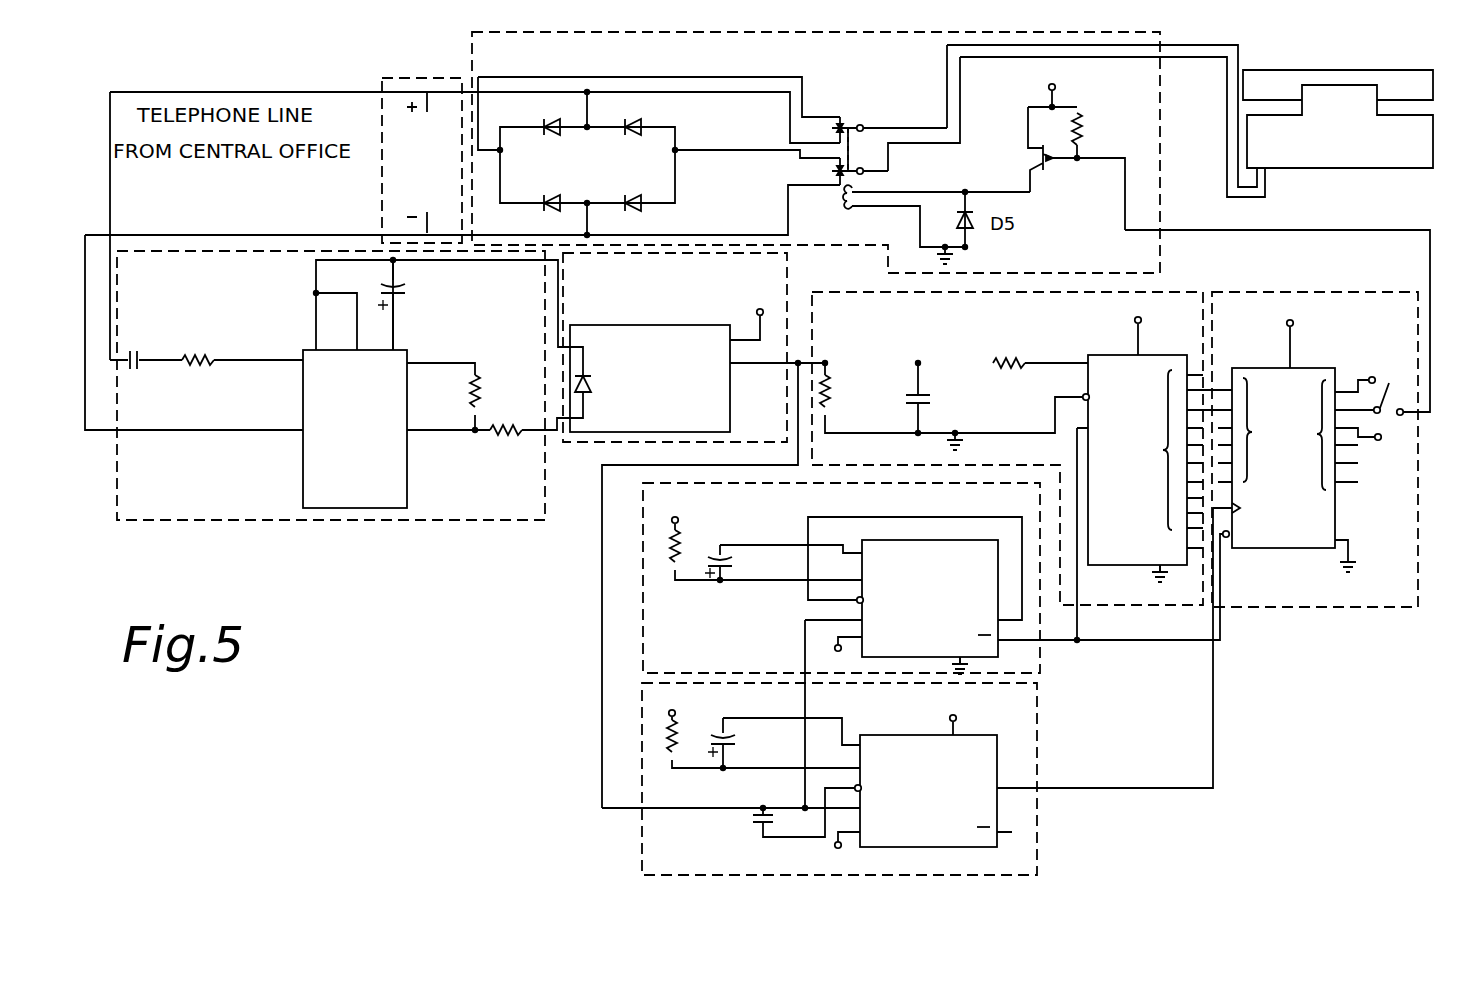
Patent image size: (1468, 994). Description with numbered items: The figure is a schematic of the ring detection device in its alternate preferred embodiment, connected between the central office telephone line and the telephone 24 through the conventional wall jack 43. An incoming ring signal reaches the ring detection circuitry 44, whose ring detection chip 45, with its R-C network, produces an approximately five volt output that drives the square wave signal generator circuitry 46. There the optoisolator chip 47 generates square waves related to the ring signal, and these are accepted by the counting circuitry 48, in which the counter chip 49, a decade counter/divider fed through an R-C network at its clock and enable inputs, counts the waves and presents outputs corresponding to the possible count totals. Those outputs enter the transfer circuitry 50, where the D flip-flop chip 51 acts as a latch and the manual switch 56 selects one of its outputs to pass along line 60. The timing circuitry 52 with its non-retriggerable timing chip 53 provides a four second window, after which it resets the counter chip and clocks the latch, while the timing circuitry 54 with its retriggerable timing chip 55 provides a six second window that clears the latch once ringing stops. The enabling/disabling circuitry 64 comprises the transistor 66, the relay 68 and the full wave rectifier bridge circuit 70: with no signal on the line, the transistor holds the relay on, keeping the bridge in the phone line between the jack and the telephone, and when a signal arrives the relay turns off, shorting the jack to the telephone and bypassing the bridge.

The telephone 24 is at (1362, 70).
The telephone jack 43 is at (410, 78).
The ring detection circuitry 44 is at (445, 520).
The ring detection chip 45 is at (303, 462).
The square wave signal generator circuitry 46 is at (790, 284).
The optoisolator chip 47 is at (677, 325).
The counting circuitry 48 is at (1172, 292).
The counter chip 49 is at (1157, 355).
The transfer circuitry 50 is at (1380, 292).
The D flip-flop chip 51 is at (1308, 368).
The timing circuitry 52 is at (1040, 668).
The timing chip 53 is at (935, 540).
The timing circuitry 54 is at (1037, 865).
The timing chip 55 is at (985, 735).
The manual switch 56 is at (1390, 382).
The line 60 is at (1415, 230).
The enabling/disabling circuitry 64 is at (1162, 108).
The transistor 66 is at (1028, 126).
The relay 68 is at (842, 120).
The full wave rectifier bridge circuit 70 is at (672, 182).